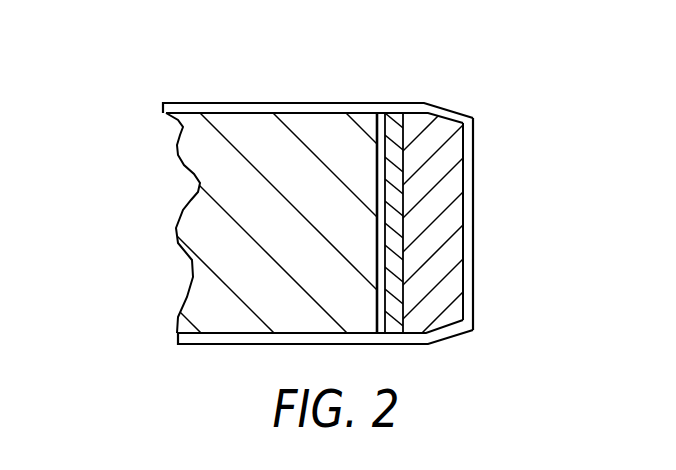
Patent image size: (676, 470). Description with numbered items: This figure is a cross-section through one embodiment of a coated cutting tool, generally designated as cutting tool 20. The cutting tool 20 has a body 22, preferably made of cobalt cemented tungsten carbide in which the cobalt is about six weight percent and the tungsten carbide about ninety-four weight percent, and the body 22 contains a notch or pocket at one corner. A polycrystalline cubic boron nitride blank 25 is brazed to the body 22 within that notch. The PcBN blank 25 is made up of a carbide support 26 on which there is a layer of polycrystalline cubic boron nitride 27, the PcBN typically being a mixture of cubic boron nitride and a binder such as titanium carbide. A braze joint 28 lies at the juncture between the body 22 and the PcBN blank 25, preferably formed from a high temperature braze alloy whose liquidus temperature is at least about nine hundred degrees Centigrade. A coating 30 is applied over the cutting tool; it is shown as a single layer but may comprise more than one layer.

The cutting tool 20 is at (130, 66).
The body 22 is at (210, 245).
The polycrystalline cubic boron nitride blank 25 is at (455, 108).
The carbide support 26 is at (390, 193).
The layer of polycrystalline cubic boron nitride 27 is at (447, 190).
The braze joint 28 is at (377, 172).
The coating 30 is at (470, 258).